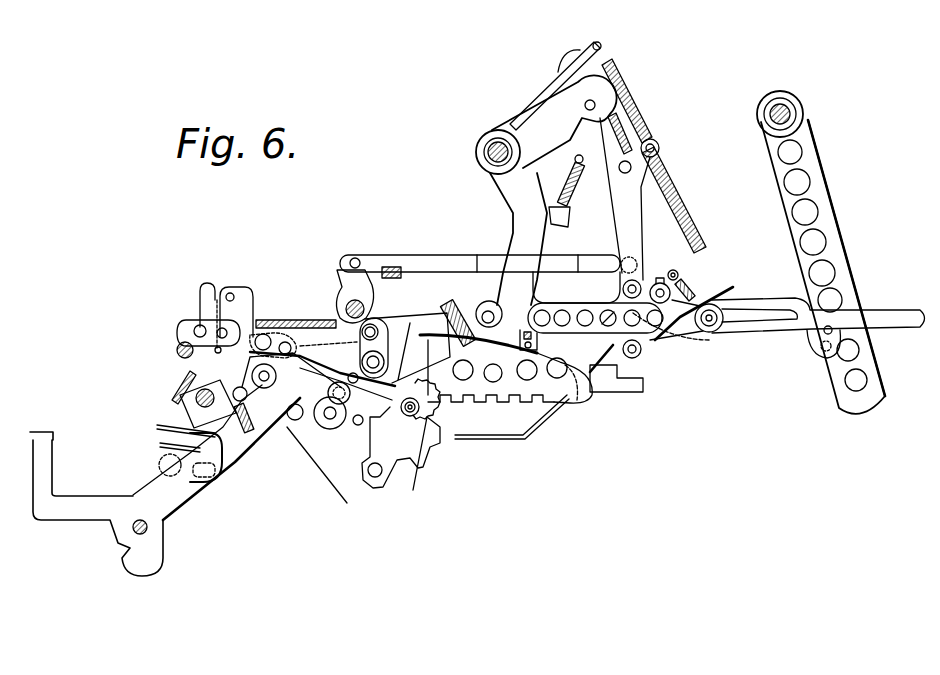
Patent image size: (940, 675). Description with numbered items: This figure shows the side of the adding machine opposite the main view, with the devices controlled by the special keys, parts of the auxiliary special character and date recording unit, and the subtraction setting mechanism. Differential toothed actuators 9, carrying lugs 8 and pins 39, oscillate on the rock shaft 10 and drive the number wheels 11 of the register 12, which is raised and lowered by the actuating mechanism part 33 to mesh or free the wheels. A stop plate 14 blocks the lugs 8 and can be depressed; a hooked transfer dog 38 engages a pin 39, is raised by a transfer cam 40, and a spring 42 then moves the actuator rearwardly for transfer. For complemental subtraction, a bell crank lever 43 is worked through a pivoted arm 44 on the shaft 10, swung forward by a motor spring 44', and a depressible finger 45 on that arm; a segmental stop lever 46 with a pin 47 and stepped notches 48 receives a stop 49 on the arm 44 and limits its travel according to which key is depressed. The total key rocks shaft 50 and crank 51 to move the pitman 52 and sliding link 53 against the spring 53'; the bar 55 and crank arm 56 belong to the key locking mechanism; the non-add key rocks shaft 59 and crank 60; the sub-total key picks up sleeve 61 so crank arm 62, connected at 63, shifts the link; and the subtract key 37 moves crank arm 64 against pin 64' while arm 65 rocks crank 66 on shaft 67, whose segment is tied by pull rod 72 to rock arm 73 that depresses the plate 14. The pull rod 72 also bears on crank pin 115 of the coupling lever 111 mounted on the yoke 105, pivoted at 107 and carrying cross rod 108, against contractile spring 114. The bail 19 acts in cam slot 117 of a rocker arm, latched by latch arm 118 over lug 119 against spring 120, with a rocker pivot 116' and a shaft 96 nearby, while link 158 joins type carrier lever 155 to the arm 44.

The lug 8 is at (580, 397).
The differential toothed actuator 9 is at (484, 350).
The rock shaft 10 is at (476, 152).
The number wheel 11 is at (428, 430).
The register 12 is at (422, 406).
The stop plate 14 is at (540, 434).
The actuator releasing and returning bail 19 is at (594, 100).
The actuating mechanism part 33 is at (372, 480).
The subtract key 37 is at (40, 432).
The hooked transfer dog 38 is at (428, 377).
The pin 39 is at (402, 404).
The transfer cam 40 is at (400, 405).
The spring 42 is at (572, 200).
The bell crank lever 43 is at (410, 323).
The pivoted arm 44 is at (542, 190).
The motor spring 44' is at (679, 196).
The depressible finger 45 is at (486, 352).
The segmental stop lever 46 is at (384, 268).
The pin 47 is at (448, 303).
The stepped notch 48 is at (447, 318).
The stop 49 is at (500, 350).
The shaft 50 is at (196, 398).
The crank 51 is at (163, 446).
The pitman 52 is at (228, 462).
The sliding link 53 is at (197, 323).
The spring 53' is at (252, 315).
The bar 55 is at (634, 393).
The crank arm 56 is at (208, 283).
The shaft 59 is at (332, 421).
The crank 60 is at (277, 427).
The sleeve 61 is at (178, 382).
The crank arm 62 is at (167, 427).
The connection 63 is at (200, 465).
The crank arm 64 is at (251, 316).
The pin 64' is at (241, 329).
The arm 65 is at (247, 430).
The crank 66 is at (248, 396).
The shaft 67 is at (277, 377).
The pull rod 72 is at (398, 256).
The rock arm 73 is at (580, 357).
The shaft 96 is at (790, 104).
The vertically movable yoke 105 is at (658, 343).
The pivot 107 is at (641, 353).
The cross rod 108 is at (711, 306).
The coupling lever 111 is at (622, 302).
The contractile spring 114 is at (687, 293).
The crank pin 115 is at (683, 333).
The pivot 116' is at (654, 271).
The cam slot 117 is at (585, 93).
The latch arm 118 is at (592, 42).
The lateral lug 119 is at (617, 99).
The spring 120 is at (650, 122).
The type carrier lever 155 is at (838, 233).
The link 158 is at (783, 330).